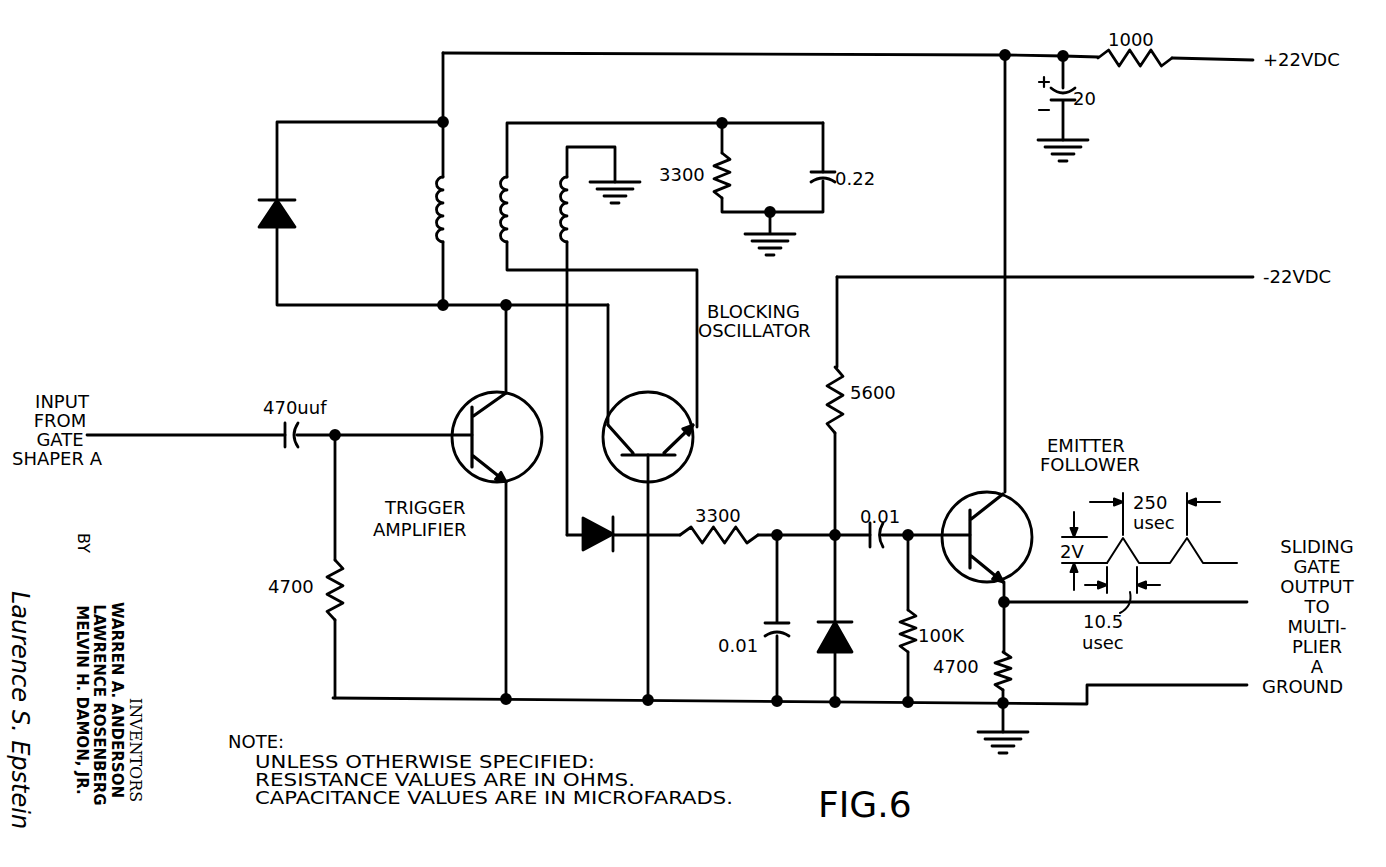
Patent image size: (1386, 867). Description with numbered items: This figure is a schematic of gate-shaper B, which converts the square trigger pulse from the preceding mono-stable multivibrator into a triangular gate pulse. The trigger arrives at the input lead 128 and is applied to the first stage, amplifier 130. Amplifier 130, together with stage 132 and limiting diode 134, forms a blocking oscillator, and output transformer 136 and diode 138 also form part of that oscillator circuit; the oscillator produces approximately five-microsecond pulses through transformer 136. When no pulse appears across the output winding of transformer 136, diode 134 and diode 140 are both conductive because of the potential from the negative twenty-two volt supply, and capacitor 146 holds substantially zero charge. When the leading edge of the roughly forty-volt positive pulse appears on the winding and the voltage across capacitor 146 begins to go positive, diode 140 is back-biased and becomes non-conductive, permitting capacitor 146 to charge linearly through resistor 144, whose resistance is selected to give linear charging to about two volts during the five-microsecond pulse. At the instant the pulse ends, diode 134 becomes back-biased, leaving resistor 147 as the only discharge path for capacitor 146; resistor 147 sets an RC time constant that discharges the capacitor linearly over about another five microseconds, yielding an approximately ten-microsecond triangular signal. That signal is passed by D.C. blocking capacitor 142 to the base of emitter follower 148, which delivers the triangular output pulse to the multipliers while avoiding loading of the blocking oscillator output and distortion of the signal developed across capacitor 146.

The input lead from gate shaper A 128 is at (197, 437).
The amplifier 130 is at (461, 415).
The stage 132 is at (645, 392).
The limiting diode 134 is at (592, 551).
The output transformer 136 is at (497, 186).
The diode 138 is at (262, 216).
The diode 140 is at (846, 638).
The D.C. blocking capacitor 142 is at (866, 546).
The resistor 144 is at (720, 543).
The capacitor 146 is at (775, 627).
The resistor 147 is at (830, 388).
The emitter follower 148 is at (960, 508).